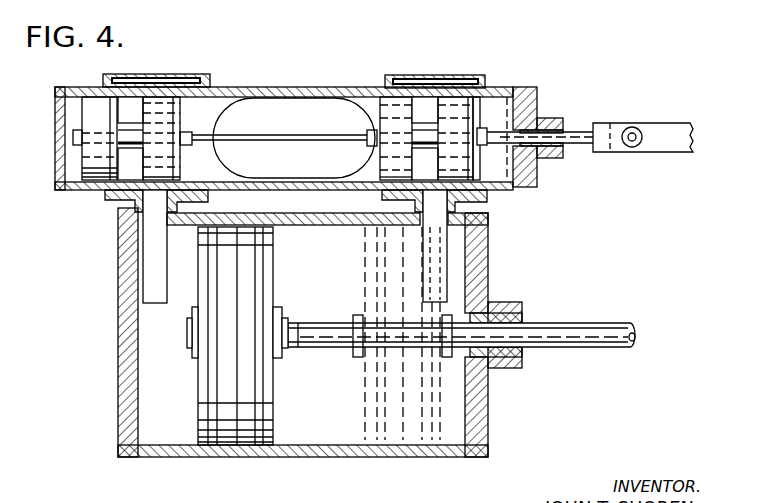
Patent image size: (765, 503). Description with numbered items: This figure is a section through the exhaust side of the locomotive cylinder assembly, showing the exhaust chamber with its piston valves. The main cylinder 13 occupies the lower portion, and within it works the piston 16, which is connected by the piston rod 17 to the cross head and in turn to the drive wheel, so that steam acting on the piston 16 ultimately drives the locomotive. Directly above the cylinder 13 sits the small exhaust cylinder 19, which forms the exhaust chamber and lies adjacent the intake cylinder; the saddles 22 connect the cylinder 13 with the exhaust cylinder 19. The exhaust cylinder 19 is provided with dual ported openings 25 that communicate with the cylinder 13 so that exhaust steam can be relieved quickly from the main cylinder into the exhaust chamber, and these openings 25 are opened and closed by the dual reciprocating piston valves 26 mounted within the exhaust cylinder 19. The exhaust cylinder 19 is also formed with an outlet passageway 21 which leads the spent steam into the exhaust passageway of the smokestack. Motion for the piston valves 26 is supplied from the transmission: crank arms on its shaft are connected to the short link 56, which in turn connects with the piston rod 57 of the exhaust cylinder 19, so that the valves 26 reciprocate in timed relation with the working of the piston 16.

The cylinder 13 is at (343, 450).
The piston 16 is at (227, 448).
The piston rod 17 is at (550, 332).
The exhaust cylinder 19 is at (502, 102).
The outlet passageway 21 is at (297, 103).
The saddle 22 is at (185, 76).
The dual ported opening 25 is at (170, 84).
The dual reciprocating piston valve 26 is at (170, 118).
The short link 56 is at (670, 135).
The piston rod 57 is at (580, 140).